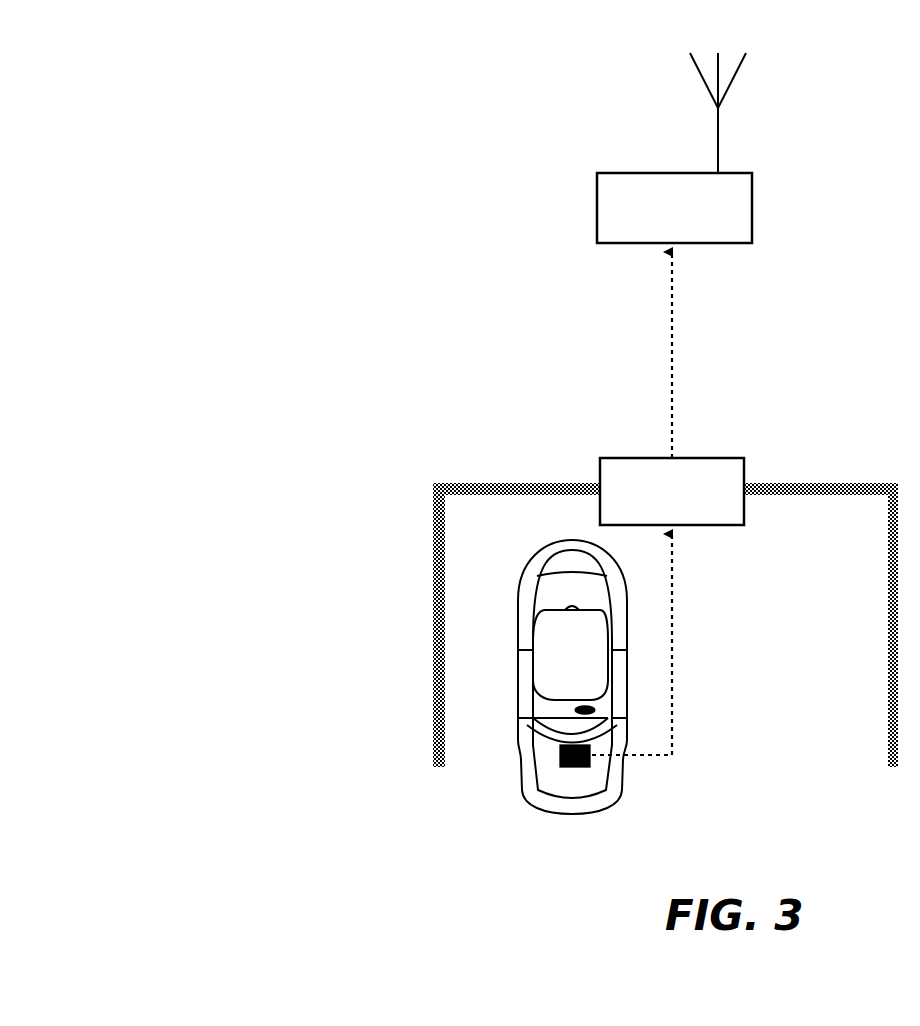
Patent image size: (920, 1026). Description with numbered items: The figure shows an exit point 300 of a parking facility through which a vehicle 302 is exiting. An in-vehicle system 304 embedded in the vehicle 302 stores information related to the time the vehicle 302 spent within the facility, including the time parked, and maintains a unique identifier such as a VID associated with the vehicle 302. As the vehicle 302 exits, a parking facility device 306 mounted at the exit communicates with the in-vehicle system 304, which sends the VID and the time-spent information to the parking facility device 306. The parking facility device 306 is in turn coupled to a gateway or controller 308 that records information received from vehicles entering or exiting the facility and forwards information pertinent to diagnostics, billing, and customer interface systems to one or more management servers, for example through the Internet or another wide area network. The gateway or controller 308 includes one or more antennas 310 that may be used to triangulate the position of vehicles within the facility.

The exit point 300 is at (102, 50).
The vehicle 302 is at (590, 668).
The in-vehicle system 304 is at (586, 766).
The parking facility device 306 is at (628, 458).
The gateway or controller 308 is at (752, 188).
The antenna 310 is at (720, 128).